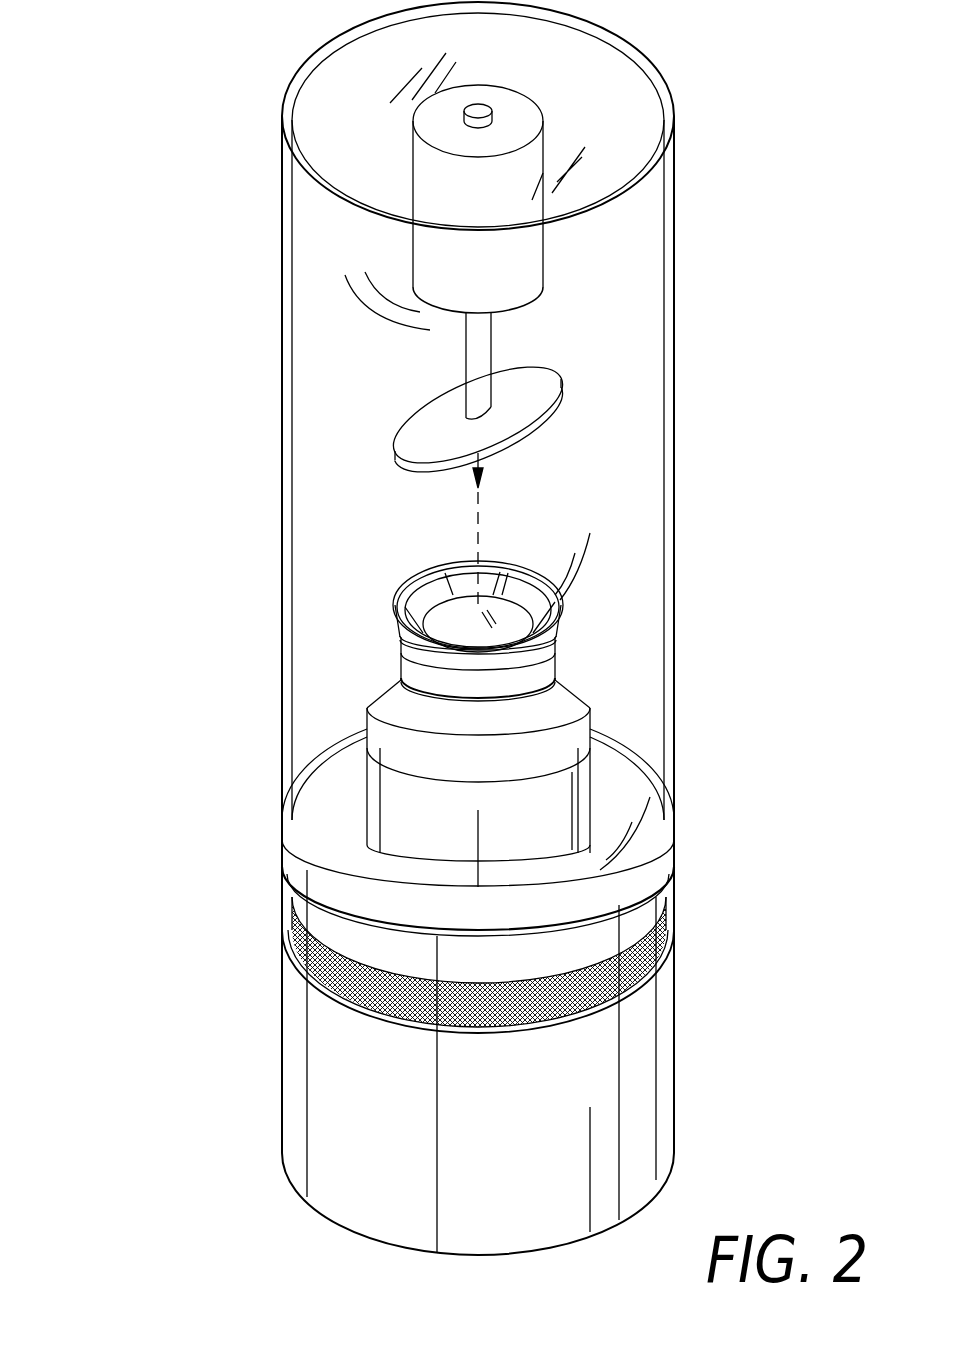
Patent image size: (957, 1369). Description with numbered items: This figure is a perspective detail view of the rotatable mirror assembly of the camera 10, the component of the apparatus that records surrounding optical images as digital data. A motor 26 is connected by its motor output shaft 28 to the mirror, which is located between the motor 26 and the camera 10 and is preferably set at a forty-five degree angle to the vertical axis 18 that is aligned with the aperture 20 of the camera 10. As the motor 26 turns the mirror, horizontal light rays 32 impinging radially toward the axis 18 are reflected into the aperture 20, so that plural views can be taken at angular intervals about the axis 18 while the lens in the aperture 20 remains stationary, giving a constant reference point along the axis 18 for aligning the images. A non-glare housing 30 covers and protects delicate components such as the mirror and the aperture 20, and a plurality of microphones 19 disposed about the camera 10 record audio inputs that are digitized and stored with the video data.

The camera 10 is at (148, 683).
The vertical axis 18 is at (477, 545).
The microphones 19 is at (298, 950).
The aperture 20 is at (441, 540).
The motor 26 is at (483, 286).
The motor output shaft 28 is at (465, 343).
The non-glare housing 30 is at (674, 670).
The horizontal light rays 32 is at (613, 410).